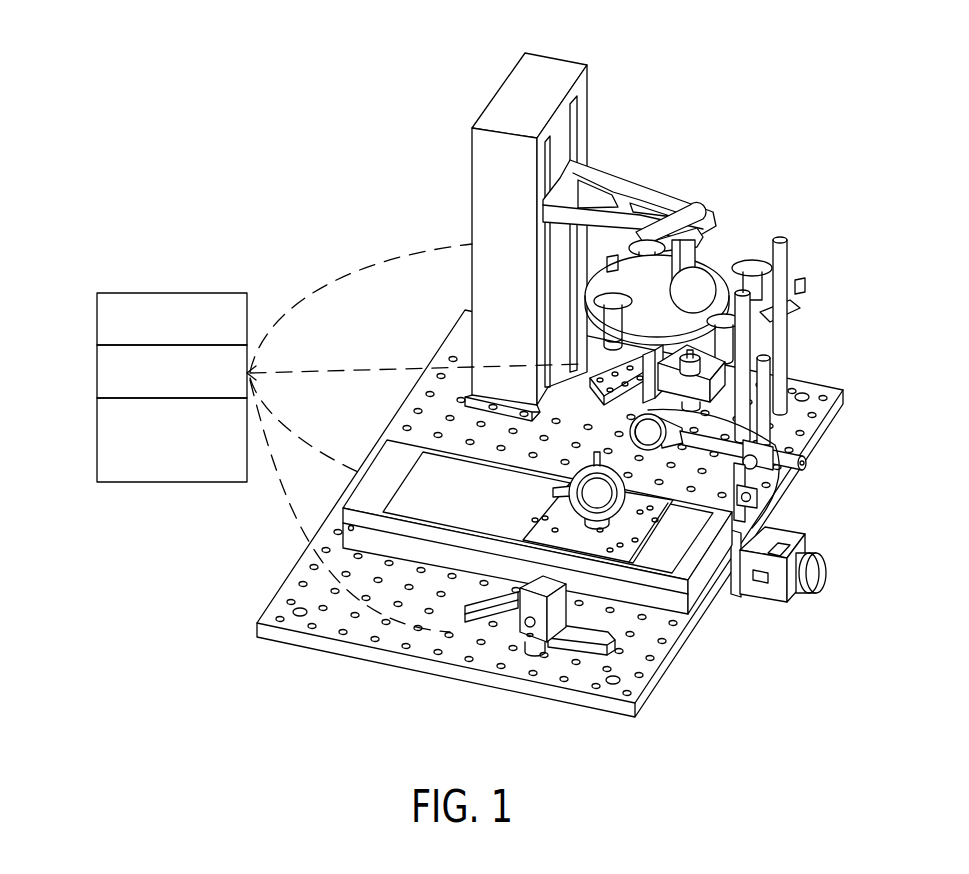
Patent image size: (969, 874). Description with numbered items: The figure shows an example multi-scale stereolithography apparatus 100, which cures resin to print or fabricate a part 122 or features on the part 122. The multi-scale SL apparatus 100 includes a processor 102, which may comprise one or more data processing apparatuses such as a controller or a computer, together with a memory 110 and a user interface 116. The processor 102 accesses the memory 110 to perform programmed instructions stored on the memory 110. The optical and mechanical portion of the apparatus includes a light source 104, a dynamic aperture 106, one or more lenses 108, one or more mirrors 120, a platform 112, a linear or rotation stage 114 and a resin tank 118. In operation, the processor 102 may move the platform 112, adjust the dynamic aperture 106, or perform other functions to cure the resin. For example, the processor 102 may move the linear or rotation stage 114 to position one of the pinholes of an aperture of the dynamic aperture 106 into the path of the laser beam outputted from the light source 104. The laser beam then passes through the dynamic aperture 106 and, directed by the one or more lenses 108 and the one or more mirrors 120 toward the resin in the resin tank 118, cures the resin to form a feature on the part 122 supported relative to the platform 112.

The multi-scale SL apparatus 100 is at (141, 328).
The processor 102 is at (100, 317).
The memory 110 is at (100, 373).
The user interface 116 is at (100, 437).
The light source 104 is at (533, 632).
The dynamic aperture 106 is at (600, 513).
The one or more lenses 108 is at (650, 433).
The platform 112 is at (580, 92).
The linear or rotation stage 114 is at (350, 515).
The resin tank 118 is at (750, 290).
The one or more mirrors 120 is at (797, 447).
The part 122 is at (707, 285).